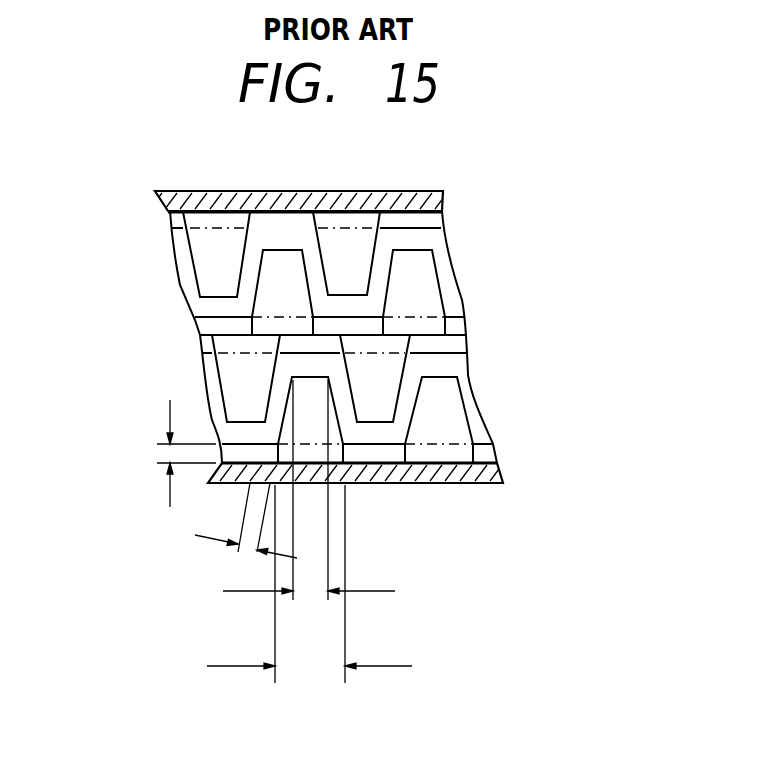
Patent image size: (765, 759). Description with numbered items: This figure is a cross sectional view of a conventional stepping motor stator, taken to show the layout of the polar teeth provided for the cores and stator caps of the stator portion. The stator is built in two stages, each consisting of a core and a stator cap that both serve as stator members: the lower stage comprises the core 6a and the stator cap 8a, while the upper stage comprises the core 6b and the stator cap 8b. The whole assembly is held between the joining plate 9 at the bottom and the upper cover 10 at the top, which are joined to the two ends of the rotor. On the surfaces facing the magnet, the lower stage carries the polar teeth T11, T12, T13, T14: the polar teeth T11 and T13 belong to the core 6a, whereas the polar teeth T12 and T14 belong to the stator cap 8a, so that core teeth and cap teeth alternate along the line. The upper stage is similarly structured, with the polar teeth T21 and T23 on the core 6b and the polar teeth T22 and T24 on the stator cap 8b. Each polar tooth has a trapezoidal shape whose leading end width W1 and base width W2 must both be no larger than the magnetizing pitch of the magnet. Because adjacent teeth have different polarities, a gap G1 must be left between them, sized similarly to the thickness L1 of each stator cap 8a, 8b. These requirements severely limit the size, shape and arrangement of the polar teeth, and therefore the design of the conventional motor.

The upper cover 10 is at (443, 198).
The stator cap 8b is at (433, 218).
The core 6b is at (455, 328).
The core 6a is at (453, 345).
The stator cap 8a is at (485, 453).
The joining plate 9 is at (487, 483).
The polar tooth T21 is at (222, 240).
The polar tooth T22 is at (280, 262).
The polar tooth T23 is at (343, 237).
The polar tooth T24 is at (410, 258).
The polar tooth T11 is at (243, 387).
The polar tooth T12 is at (312, 380).
The polar tooth T13 is at (380, 410).
The polar tooth T14 is at (442, 435).
The thickness of stator cap L1 is at (171, 453).
The gap between polar teeth G1 is at (246, 534).
The width of leading end of trapezoid W1 is at (309, 505).
The width of base of trapezoid W2 is at (309, 584).